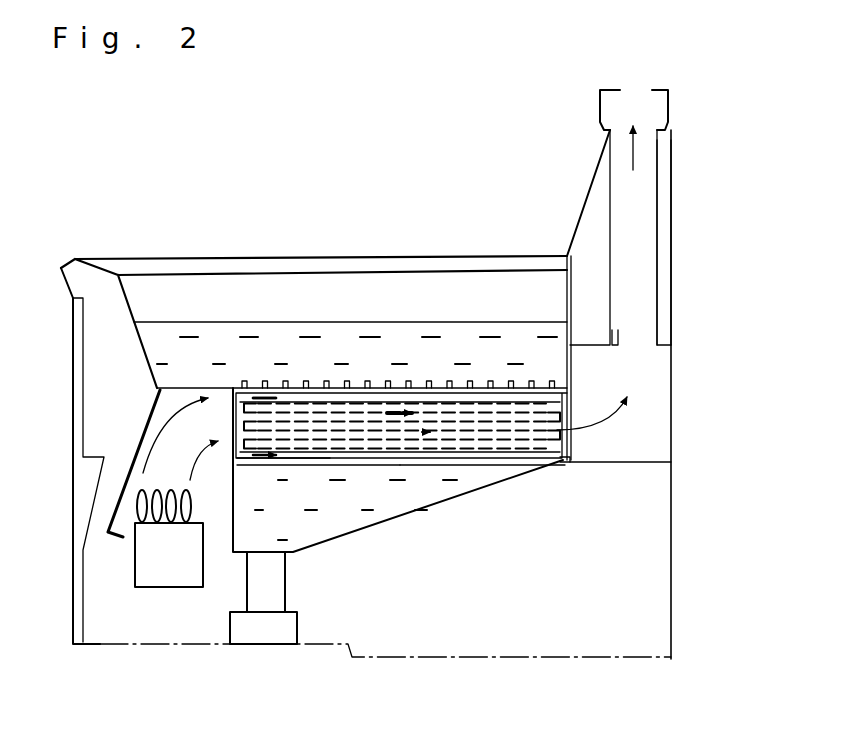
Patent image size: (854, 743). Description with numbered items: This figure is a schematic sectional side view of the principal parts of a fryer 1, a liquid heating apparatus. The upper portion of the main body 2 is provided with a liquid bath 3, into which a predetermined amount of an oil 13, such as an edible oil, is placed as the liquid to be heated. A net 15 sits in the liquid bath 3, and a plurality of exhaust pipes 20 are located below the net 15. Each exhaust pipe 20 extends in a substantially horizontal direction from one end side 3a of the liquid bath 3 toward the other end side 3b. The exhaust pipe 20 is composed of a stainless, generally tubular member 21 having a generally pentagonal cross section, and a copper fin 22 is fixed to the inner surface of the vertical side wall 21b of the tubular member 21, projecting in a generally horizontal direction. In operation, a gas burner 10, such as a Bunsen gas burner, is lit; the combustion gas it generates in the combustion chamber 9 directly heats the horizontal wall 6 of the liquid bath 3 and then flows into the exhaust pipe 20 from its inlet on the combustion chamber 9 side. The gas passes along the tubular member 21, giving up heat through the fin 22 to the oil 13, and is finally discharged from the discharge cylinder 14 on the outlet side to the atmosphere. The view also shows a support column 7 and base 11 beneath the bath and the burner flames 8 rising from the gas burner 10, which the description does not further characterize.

The fryer 1 is at (694, 114).
The main body 2 is at (673, 547).
The liquid bath 3 is at (124, 323).
The one end side of the liquid bath 3a is at (170, 385).
The other end side of the liquid bath 3b is at (563, 377).
The horizontal wall 6 is at (180, 393).
The support column 7 is at (230, 540).
The burner flames 8 is at (118, 500).
The combustion chamber 9 is at (183, 448).
The gas burner 10 is at (135, 571).
The base 11 is at (267, 638).
The oil 13 is at (312, 337).
The discharge cylinder 14 is at (658, 233).
The net 15 is at (377, 337).
The exhaust pipe 20 is at (473, 470).
The tubular member 21 is at (362, 460).
The vertical side wall 21b is at (313, 455).
The fin 22 is at (533, 450).